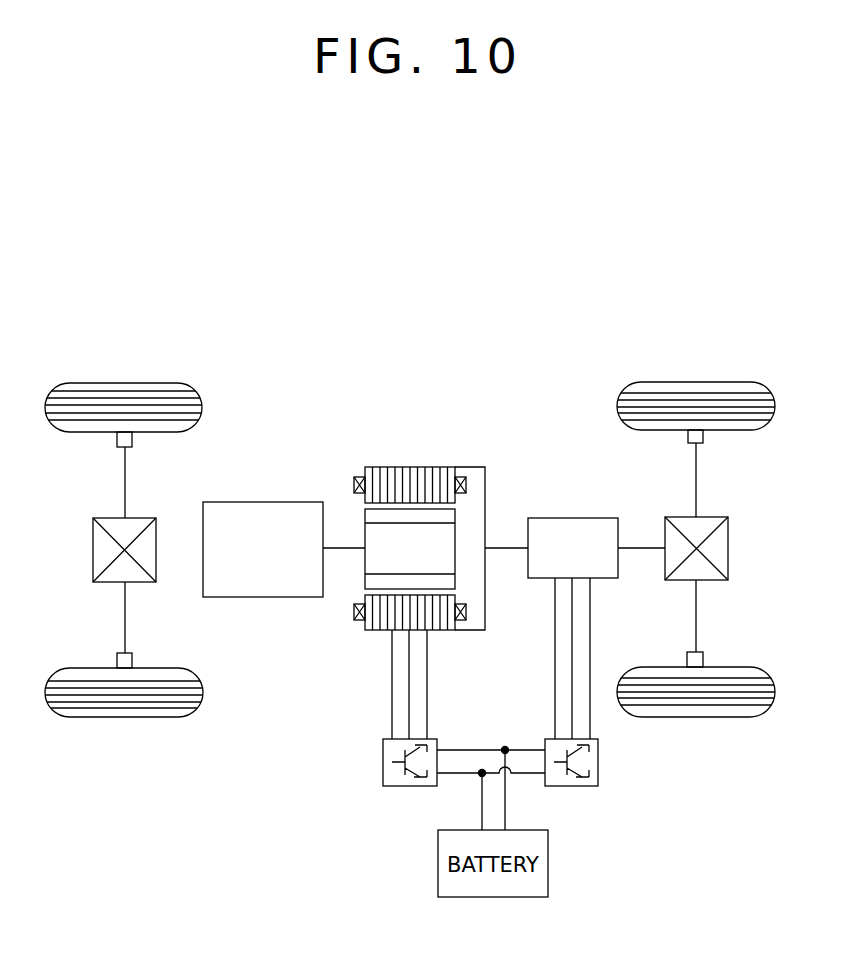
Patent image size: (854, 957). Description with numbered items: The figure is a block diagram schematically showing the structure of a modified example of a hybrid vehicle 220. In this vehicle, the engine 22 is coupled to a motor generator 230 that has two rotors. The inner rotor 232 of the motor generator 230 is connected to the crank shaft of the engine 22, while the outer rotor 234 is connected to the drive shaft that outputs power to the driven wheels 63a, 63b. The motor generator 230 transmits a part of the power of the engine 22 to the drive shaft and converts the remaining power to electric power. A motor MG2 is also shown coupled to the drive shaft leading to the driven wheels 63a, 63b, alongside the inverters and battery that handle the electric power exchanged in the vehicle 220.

The engine 22 is at (262, 502).
The hybrid vehicle 220 is at (434, 446).
The motor generator 230 is at (401, 493).
The inner rotor 232 is at (365, 537).
The outer rotor 234 is at (410, 467).
The driven wheel 63a is at (695, 382).
The driven wheel 63b is at (697, 717).
The motor MG2 is at (572, 518).